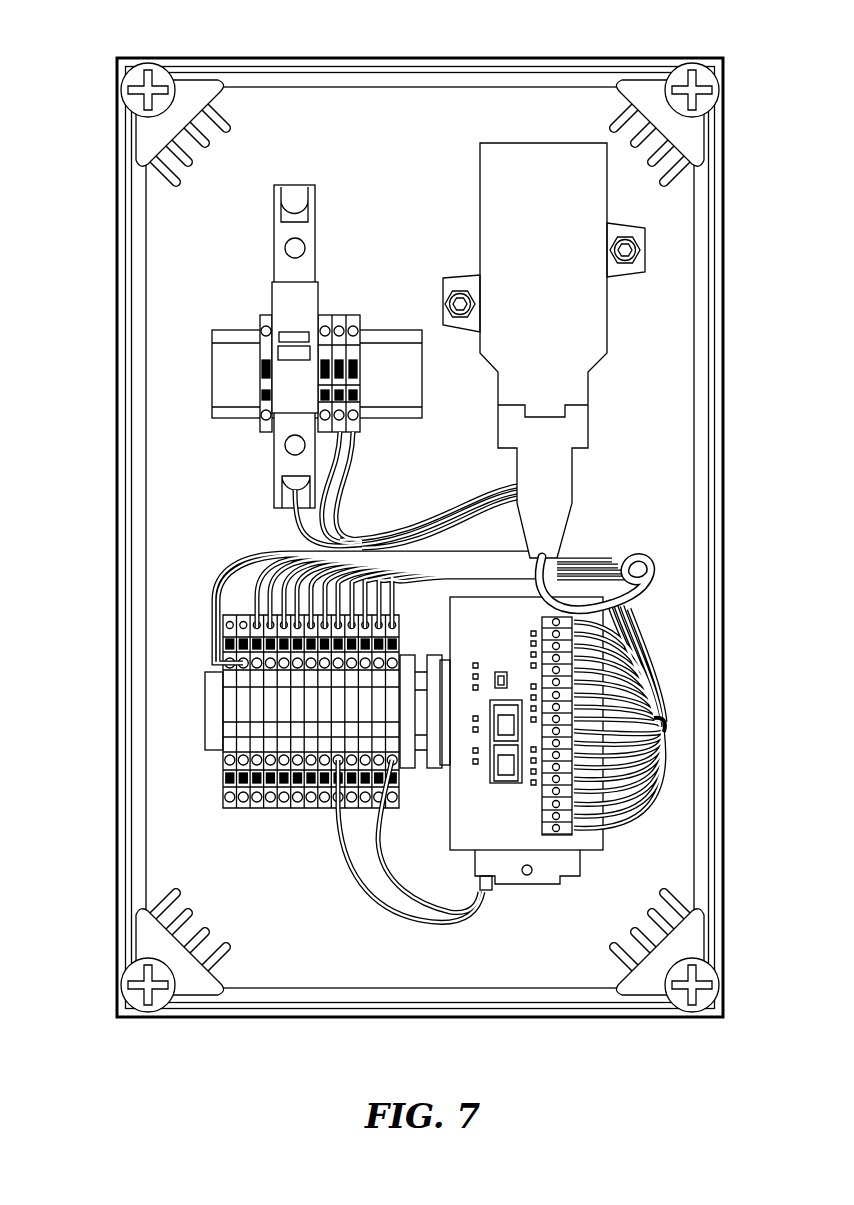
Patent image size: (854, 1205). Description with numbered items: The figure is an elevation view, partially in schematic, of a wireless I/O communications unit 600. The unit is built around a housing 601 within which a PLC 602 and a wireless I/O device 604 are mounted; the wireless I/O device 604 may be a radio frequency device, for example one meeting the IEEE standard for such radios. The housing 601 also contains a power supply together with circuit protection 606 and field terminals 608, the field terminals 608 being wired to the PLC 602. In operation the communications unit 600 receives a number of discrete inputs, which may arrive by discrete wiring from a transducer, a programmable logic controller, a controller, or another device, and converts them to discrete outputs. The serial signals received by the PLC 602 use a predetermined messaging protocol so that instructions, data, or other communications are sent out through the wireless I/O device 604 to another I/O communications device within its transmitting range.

The wireless communications unit 600 is at (766, 21).
The housing 601 is at (117, 473).
The PLC 602 is at (590, 852).
The wireless I/O device 604 is at (585, 316).
The circuit protection 606 is at (222, 375).
The field terminals 608 is at (205, 712).